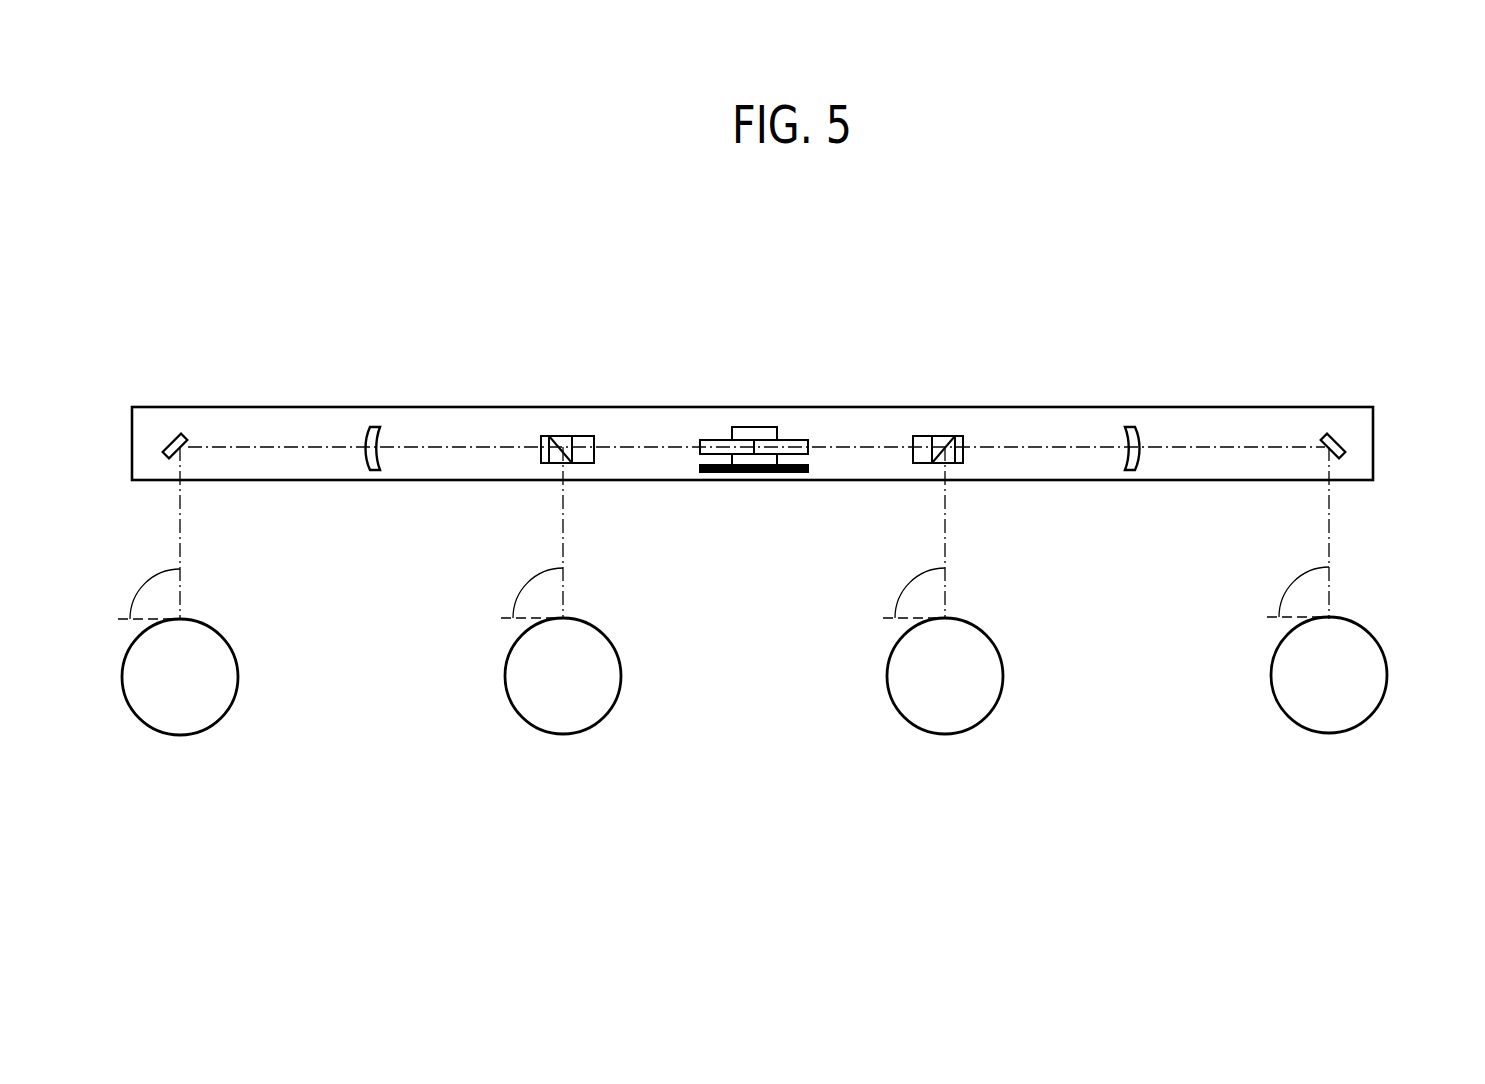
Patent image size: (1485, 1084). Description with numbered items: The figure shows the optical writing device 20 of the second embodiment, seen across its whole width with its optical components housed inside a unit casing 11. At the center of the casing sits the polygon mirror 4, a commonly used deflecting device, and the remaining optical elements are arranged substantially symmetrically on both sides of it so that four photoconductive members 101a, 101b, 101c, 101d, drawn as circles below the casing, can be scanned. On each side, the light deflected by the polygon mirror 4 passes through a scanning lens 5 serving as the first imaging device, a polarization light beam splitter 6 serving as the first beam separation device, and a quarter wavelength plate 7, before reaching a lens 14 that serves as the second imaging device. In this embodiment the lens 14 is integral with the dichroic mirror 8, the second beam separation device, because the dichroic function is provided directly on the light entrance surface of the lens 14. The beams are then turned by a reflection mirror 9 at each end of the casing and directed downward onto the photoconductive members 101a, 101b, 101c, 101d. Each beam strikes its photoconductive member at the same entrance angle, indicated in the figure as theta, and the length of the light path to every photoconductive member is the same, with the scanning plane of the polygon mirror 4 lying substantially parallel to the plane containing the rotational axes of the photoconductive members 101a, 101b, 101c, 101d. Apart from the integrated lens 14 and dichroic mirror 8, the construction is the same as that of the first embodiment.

The polygon mirror 4 is at (718, 441).
The scanning lens 5 is at (585, 436).
The polarization light beam splitter 6 is at (561, 436).
The quarter wavelength plate 7 is at (545, 436).
The dichroic mirror 8 is at (381, 447).
The reflection mirror 9 is at (168, 437).
The unit casing 11 is at (313, 481).
The lens 14 is at (370, 427).
The optical writing device 20 is at (857, 276).
The photoconductive member 101a is at (238, 677).
The photoconductive member 101b is at (621, 677).
The photoconductive member 101c is at (1003, 677).
The photoconductive member 101d is at (1387, 676).